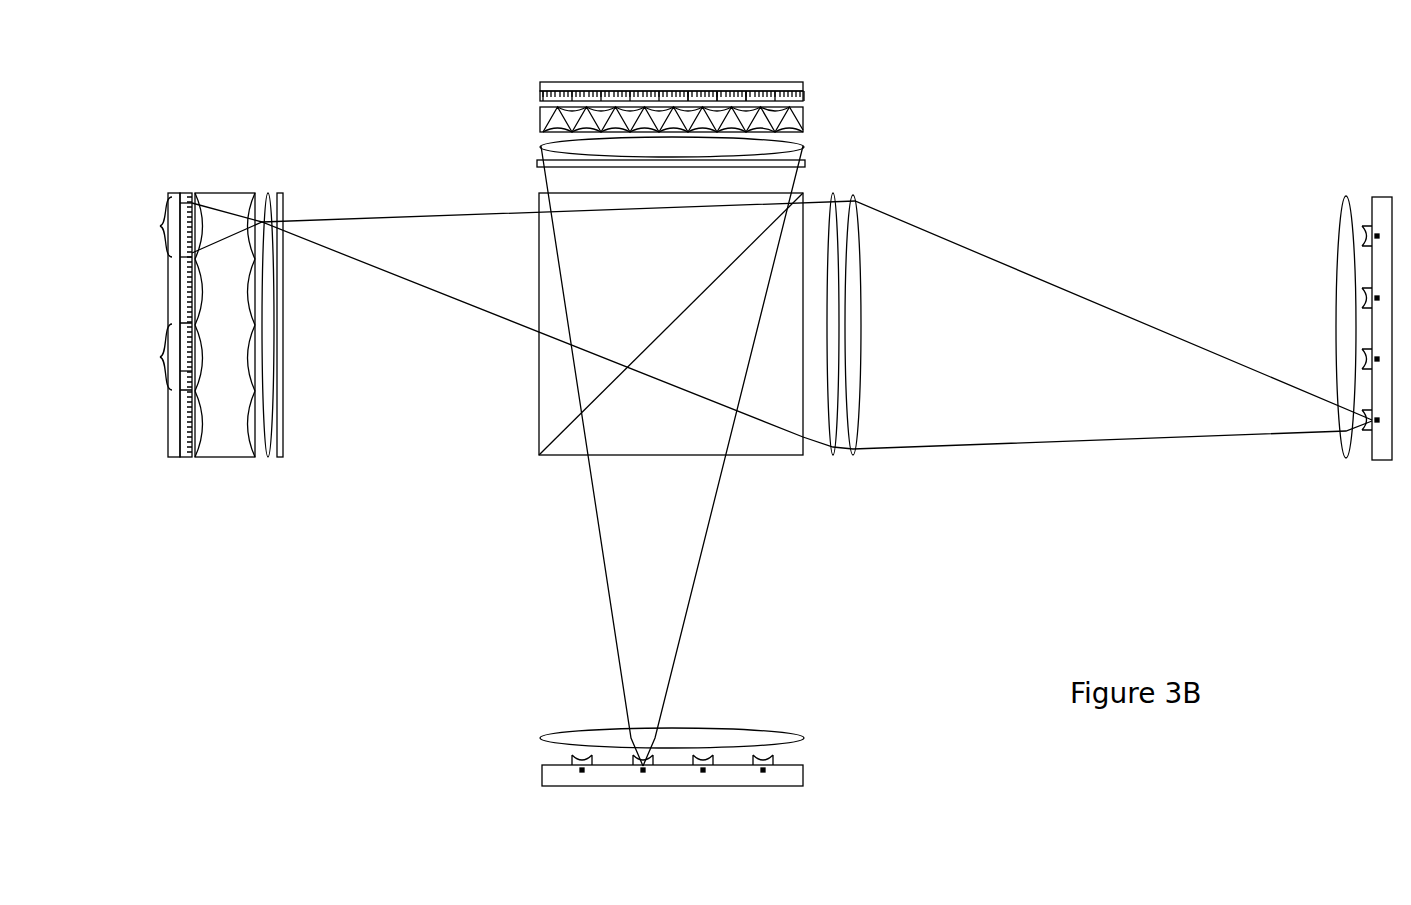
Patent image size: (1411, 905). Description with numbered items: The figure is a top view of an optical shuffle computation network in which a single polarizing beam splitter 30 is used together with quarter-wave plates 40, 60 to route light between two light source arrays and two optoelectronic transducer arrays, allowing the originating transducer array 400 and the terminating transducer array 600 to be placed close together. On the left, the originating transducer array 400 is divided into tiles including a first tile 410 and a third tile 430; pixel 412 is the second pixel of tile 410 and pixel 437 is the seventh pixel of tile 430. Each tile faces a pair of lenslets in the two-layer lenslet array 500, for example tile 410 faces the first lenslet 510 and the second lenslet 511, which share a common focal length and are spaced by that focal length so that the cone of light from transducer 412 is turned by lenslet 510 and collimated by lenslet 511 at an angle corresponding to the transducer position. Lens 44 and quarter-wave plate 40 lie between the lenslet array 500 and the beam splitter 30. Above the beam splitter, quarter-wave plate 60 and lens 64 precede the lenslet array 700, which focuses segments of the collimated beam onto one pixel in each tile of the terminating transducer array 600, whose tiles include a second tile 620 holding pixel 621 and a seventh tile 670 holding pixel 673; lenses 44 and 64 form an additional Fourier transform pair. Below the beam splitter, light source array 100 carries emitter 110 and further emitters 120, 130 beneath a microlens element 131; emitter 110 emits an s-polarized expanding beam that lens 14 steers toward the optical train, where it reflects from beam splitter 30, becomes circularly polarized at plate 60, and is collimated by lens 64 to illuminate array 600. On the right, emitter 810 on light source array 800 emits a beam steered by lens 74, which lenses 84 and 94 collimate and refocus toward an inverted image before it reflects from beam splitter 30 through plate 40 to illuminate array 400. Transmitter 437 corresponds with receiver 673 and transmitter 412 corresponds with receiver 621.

The lens 14 is at (805, 738).
The polarizing beam splitter 30 is at (539, 193).
The quarter-wave plate 40 is at (282, 458).
The lens 44 is at (268, 458).
The quarter-wave plate 60 is at (805, 164).
The lens 64 is at (805, 147).
The lens 74 is at (1340, 212).
The lens 84 is at (853, 458).
The lens 94 is at (833, 458).
The light source array 100 is at (719, 807).
The emitter 110 is at (763, 786).
The pixel 120 is at (703, 786).
The pixel 130 is at (643, 786).
The microlens 131 is at (636, 760).
The originating transducer array 400 is at (160, 337).
The first tile 410 is at (160, 227).
The pixel 412 is at (185, 203).
The third tile 430 is at (159, 356).
The pixel 437 is at (185, 371).
The lenslet array 500 is at (227, 338).
The first lenslet 510 is at (210, 193).
The second lenslet 511 is at (240, 193).
The terminating transducer array 600 is at (671, 85).
The second tile 620 is at (578, 80).
The pixel 621 is at (575, 92).
The seventh tile 670 is at (731, 80).
The pixel 673 is at (730, 92).
The lenslet array 700 is at (540, 120).
The light source array 800 is at (1382, 197).
The emitter 810 is at (1372, 425).